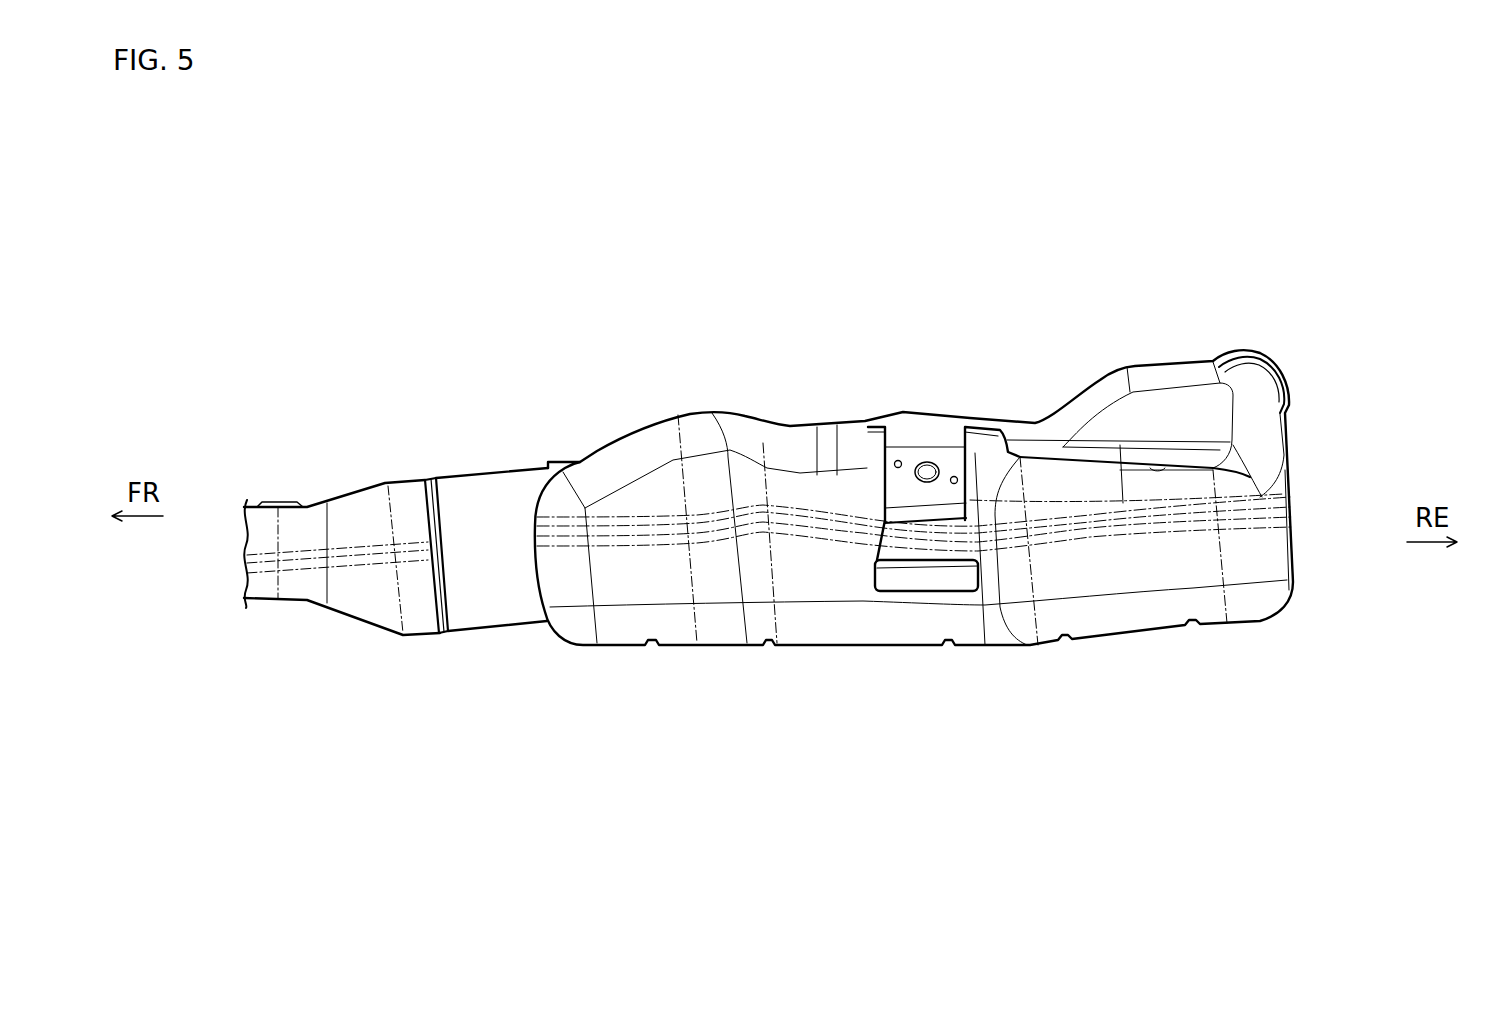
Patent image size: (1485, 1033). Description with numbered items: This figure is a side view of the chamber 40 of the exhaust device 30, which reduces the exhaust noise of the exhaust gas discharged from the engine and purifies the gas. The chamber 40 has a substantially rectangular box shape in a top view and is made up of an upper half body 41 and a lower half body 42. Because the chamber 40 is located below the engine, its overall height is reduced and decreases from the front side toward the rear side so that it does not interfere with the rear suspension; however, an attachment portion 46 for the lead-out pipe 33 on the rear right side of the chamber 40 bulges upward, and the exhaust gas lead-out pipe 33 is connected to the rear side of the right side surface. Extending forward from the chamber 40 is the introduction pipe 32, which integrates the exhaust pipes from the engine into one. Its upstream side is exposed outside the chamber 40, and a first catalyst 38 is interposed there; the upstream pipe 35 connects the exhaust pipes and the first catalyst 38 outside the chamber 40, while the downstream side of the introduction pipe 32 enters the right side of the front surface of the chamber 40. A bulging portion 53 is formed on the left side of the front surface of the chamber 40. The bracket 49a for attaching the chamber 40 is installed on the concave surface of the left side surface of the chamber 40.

The exhaust device 30 is at (983, 467).
The introduction pipe 32 is at (396, 527).
The lead-out pipe 33 is at (1223, 350).
The upstream pipe 35 is at (370, 615).
The first catalyst 38 is at (487, 620).
The chamber 40 is at (1358, 497).
The upper half body 41 is at (1290, 450).
The lower half body 42 is at (1328, 539).
The attachment portion 46 is at (1158, 377).
The bracket 49a is at (923, 548).
The bulging portion 53 is at (582, 618).